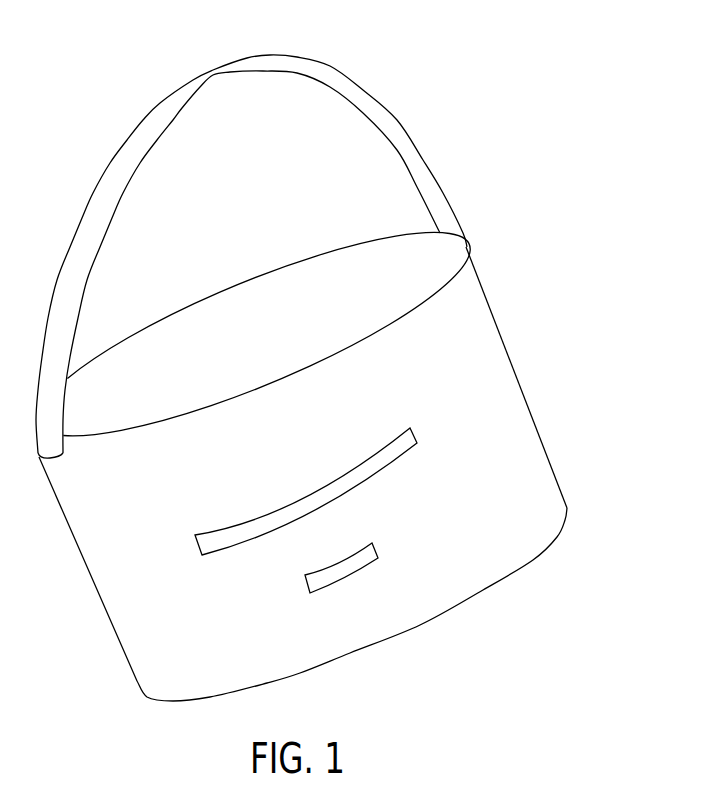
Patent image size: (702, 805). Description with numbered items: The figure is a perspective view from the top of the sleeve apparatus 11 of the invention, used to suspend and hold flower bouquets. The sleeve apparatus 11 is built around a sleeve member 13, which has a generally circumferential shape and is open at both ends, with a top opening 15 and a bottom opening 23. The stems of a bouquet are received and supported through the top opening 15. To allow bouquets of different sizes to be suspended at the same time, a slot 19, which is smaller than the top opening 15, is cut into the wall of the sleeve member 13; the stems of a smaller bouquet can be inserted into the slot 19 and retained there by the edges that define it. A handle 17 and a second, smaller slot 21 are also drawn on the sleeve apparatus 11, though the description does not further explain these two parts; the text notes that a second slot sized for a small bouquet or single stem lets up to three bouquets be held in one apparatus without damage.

The sleeve apparatus 11 is at (519, 115).
The sleeve member 13 is at (242, 474).
The top opening 15 is at (258, 293).
The handle 17 is at (260, 71).
The slot 19 is at (368, 460).
The lower slot 21 is at (350, 558).
The bottom opening 23 is at (382, 643).